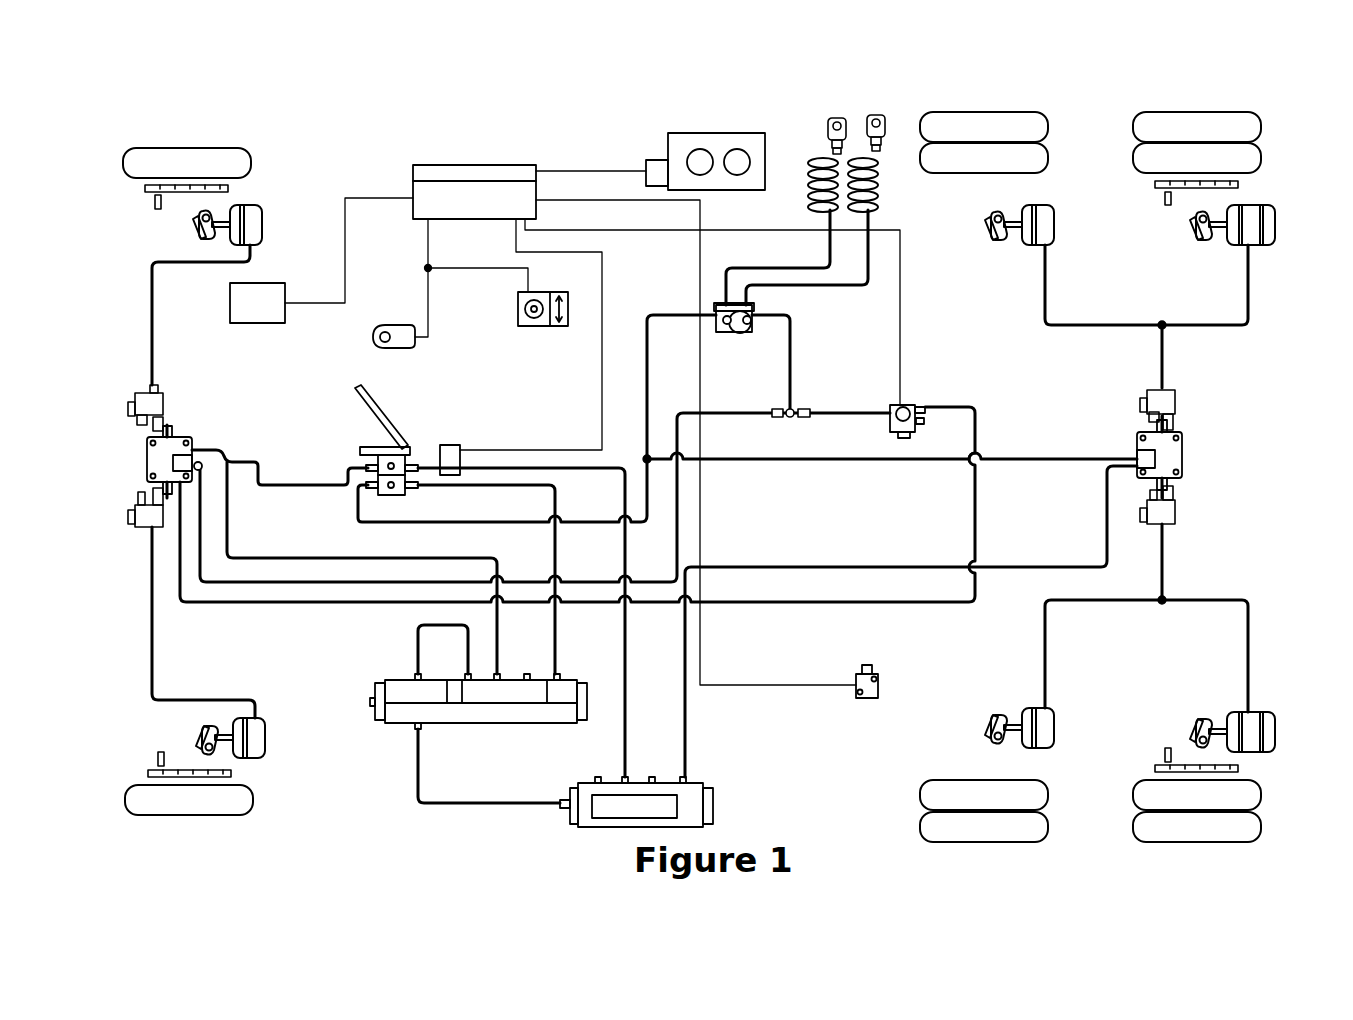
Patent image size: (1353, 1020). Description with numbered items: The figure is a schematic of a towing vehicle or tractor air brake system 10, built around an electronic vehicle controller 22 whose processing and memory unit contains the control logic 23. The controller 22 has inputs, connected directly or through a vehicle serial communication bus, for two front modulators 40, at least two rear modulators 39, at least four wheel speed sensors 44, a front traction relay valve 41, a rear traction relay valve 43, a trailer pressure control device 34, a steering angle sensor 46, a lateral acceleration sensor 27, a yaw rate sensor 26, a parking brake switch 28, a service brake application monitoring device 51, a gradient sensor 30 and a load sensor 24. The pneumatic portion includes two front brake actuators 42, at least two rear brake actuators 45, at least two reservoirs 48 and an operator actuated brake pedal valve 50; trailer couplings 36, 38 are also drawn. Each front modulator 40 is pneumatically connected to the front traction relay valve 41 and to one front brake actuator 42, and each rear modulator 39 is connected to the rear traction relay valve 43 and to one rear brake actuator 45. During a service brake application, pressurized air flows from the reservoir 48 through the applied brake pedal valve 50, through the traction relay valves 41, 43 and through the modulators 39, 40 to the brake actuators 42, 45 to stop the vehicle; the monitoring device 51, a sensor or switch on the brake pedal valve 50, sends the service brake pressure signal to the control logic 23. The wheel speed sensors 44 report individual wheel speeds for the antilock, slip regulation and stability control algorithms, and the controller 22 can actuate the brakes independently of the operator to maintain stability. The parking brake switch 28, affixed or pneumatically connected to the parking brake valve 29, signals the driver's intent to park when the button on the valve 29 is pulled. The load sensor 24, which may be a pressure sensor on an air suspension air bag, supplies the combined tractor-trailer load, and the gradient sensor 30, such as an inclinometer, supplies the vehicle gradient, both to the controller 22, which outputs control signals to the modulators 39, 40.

The air brake system 10 is at (653, 117).
The electronic vehicle controller 22 is at (491, 165).
The control logic 23 is at (487, 210).
The load sensor 24 is at (866, 698).
The yaw rate sensor 26 is at (532, 326).
The lateral acceleration sensor 27 is at (561, 326).
The parking brake switch 28 is at (648, 162).
The parking brake valve 29 is at (725, 133).
The gradient sensor 30 is at (262, 323).
The trailer pressure control device 34 is at (905, 405).
The trailer supply coupling 36 is at (876, 115).
The trailer service coupling 38 is at (834, 117).
The rear modulator 39 is at (1178, 400).
The front modulator 40 is at (165, 396).
The front traction relay valve 41 is at (182, 440).
The front brake actuator 42 is at (266, 210).
The rear traction relay valve 43 is at (1184, 456).
The wheel speed sensor 44 is at (153, 202).
The rear brake actuator 45 is at (1052, 210).
The steering angle sensor 46 is at (373, 340).
The reservoir 48 is at (570, 680).
The brake pedal valve 50 is at (395, 424).
The service brake application monitoring device 51 is at (452, 445).